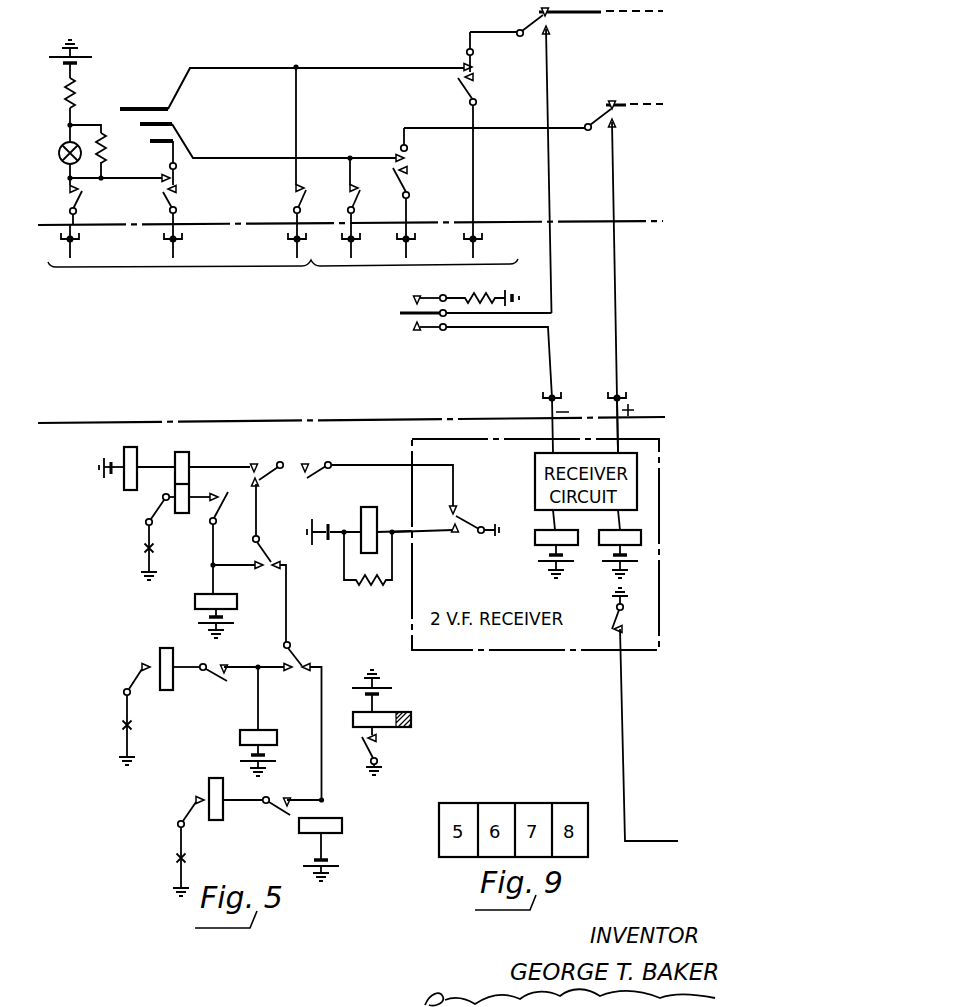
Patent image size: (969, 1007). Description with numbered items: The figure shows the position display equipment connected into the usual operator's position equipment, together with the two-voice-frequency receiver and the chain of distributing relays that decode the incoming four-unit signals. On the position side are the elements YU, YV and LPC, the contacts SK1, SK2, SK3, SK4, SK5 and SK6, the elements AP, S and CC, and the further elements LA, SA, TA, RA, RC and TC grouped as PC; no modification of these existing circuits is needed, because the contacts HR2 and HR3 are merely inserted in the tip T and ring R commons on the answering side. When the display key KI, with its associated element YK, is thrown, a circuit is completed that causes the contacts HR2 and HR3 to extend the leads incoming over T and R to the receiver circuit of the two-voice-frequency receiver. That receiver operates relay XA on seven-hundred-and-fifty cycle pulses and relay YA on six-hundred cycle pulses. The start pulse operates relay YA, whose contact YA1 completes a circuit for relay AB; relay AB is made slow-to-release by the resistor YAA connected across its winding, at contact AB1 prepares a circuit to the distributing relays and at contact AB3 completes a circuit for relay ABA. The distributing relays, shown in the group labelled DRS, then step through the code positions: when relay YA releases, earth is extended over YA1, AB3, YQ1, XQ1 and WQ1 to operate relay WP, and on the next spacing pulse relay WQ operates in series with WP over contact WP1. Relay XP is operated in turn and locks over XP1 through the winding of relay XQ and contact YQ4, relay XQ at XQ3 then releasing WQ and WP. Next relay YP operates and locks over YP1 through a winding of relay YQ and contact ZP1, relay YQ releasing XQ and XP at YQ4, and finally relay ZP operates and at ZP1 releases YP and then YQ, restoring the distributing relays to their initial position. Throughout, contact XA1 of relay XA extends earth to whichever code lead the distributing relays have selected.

The resistor YU is at (57, 93).
The resistor YV is at (114, 149).
The lamp LPC is at (57, 147).
The key switch contact SK6 is at (92, 201).
The key switch contact SK1 is at (188, 196).
The key switch contact SK2 is at (316, 204).
The key switch contact SK3 is at (370, 190).
The key switch contact SK4 is at (419, 175).
The key switch contact SK5 is at (484, 127).
The plug AP is at (140, 98).
The tip lead T is at (310, 88).
The ring lead R is at (268, 131).
The sleeve contact S is at (163, 155).
The control circuit CC is at (329, 126).
The contact of relay HR HR2 is at (590, 160).
The contact of relay HR HR3 is at (624, 277).
The relay contact LA is at (80, 244).
The relay contact SA is at (184, 243).
The relay contact TA is at (307, 243).
The relay contact RA is at (362, 243).
The relay contact RC is at (417, 242).
The relay contact TC is at (483, 242).
The plug circuit PC is at (283, 273).
The display key KI is at (465, 346).
The resistor YK is at (482, 290).
The relay XA is at (534, 550).
The relay YA is at (661, 530).
The contact of relay YA YA1 is at (417, 515).
The contact of relay XA XA1 is at (617, 714).
The relay ZP is at (161, 450).
The relay YQ is at (215, 451).
The contact of relay YQ YQ1 is at (271, 485).
The contact of relay AB AB3 is at (321, 456).
The contact of relay ZP ZP1 is at (146, 537).
The contact of relay YP YP1 is at (213, 536).
The contact of relay XQ XQ1 is at (263, 589).
The relay YP is at (266, 610).
The relay AB is at (401, 510).
The resistor YAA is at (368, 571).
The relay XQ is at (156, 645).
The contact of relay YQ YQ4 is at (121, 715).
The contact of relay XP XP1 is at (228, 662).
The contact of relay WQ WQ1 is at (314, 721).
The relay XP is at (301, 741).
The relay ABA is at (451, 718).
The contact of relay AB AB1 is at (389, 751).
The relay WQ is at (206, 781).
The contact of relay XQ XQ3 is at (175, 847).
The contact of relay WP WP1 is at (273, 797).
The relay WP is at (371, 828).
The dial receiving set DRS is at (74, 791).